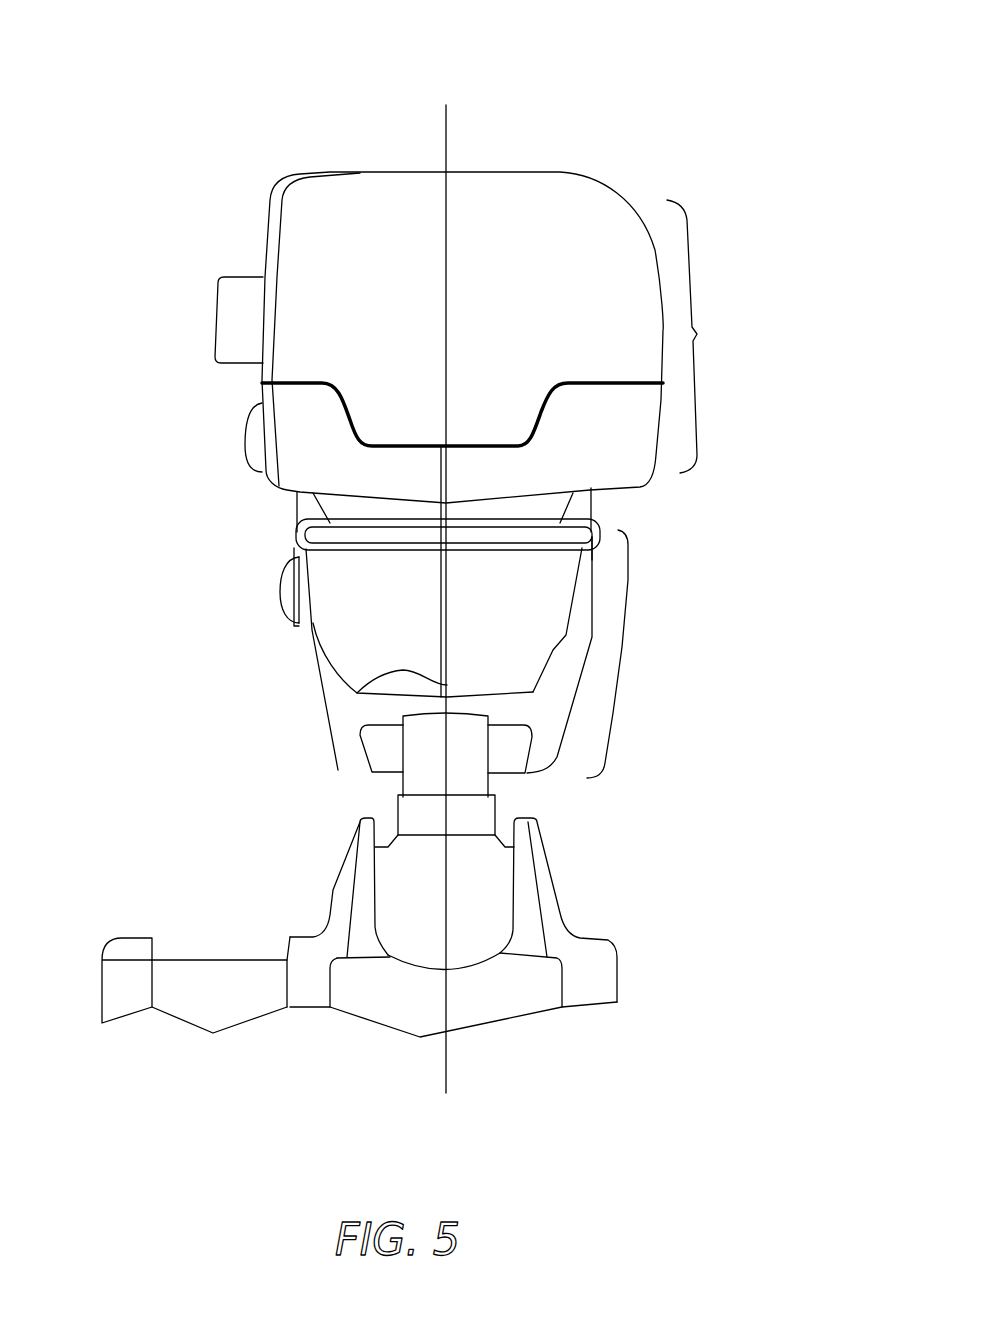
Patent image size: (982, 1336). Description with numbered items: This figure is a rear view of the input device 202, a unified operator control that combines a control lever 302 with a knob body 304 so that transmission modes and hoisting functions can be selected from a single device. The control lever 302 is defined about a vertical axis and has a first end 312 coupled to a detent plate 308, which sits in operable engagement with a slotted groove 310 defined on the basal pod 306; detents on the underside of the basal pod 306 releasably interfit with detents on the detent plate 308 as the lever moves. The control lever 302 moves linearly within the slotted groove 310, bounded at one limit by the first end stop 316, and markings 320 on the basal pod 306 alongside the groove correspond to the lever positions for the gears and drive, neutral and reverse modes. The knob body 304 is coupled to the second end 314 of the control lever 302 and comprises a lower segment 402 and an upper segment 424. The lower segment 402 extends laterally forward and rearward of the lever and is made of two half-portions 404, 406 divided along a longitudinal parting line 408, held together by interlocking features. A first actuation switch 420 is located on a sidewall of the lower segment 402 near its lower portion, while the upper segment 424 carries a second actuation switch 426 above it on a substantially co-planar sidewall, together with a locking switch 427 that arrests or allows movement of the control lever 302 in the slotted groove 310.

The input device 202 is at (714, 65).
The knob body 304 is at (288, 181).
The upper segment 424 is at (697, 334).
The locking switch 427 is at (217, 298).
The second actuation switch 426 is at (245, 447).
The half-portion 404 is at (297, 538).
The half-portion 406 is at (600, 531).
The lower segment 402 is at (618, 653).
The first actuation switch 420 is at (280, 580).
The longitudinal parting line 408 is at (357, 693).
The control lever 302 is at (402, 763).
The second end 314 is at (423, 732).
The first end 312 is at (472, 797).
The slotted groove 310 is at (375, 890).
The detent plate 308 is at (497, 878).
The first end stop 316 is at (470, 963).
The markings 320 is at (200, 953).
The basal pod 306 is at (121, 955).